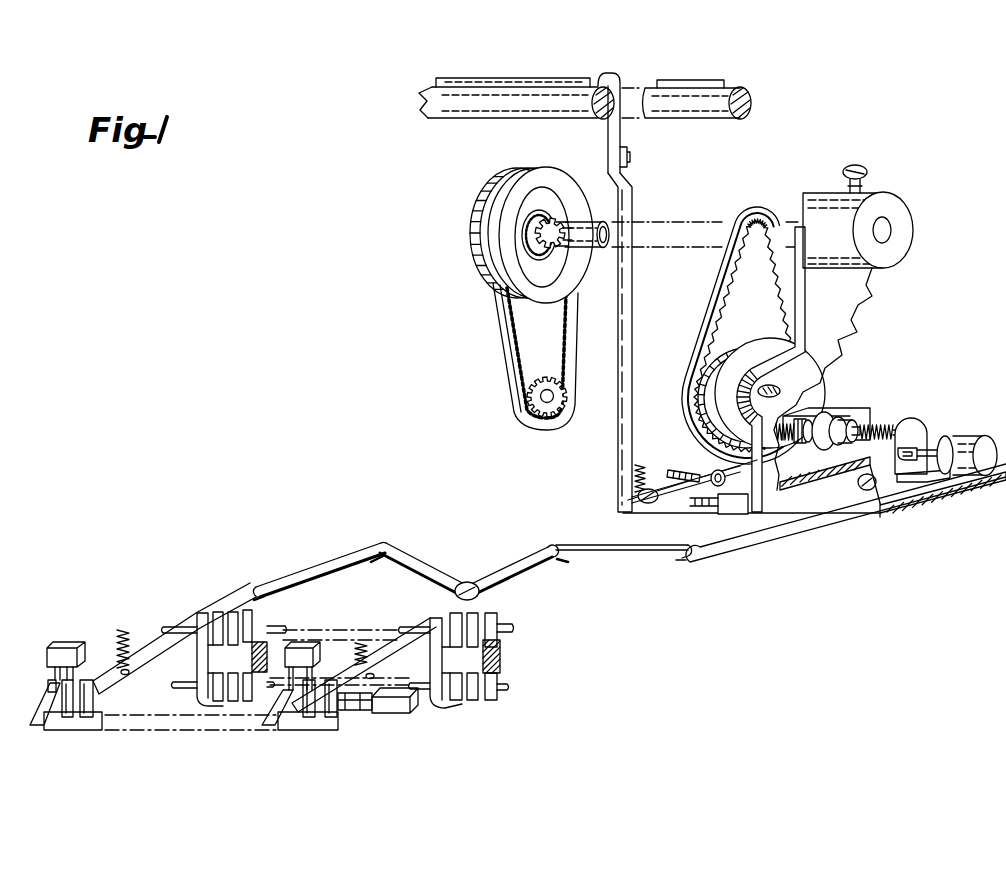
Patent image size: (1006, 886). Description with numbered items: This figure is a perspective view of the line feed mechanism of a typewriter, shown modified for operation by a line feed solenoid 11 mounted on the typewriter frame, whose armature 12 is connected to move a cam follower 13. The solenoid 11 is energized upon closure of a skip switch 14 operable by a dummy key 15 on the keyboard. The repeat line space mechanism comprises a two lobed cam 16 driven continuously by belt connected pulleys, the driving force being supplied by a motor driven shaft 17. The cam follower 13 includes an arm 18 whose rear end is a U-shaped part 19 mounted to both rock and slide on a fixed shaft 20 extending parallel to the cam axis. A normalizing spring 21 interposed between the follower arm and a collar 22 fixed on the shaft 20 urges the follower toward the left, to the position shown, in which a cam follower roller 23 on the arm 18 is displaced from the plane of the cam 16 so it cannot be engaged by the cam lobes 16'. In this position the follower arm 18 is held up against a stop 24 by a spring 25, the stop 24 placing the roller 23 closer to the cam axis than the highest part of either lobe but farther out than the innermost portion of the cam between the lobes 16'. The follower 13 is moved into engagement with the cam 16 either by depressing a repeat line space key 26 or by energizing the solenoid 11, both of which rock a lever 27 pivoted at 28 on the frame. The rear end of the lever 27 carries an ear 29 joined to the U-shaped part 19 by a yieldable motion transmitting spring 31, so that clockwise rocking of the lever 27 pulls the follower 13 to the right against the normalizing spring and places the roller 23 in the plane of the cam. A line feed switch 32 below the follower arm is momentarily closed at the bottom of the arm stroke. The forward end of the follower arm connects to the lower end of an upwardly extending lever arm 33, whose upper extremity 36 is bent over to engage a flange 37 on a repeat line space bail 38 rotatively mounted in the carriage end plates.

The line feed solenoid 11 is at (960, 443).
The armature 12 is at (937, 441).
The cam follower 13 is at (666, 512).
The skip switch 14 is at (390, 712).
The dummy key 15 is at (316, 656).
The two lobed cam 16 is at (731, 335).
The cam lobes 16' is at (761, 371).
The motor driven shaft 17 is at (550, 400).
The follower arm 18 is at (660, 482).
The U-shaped part 19 is at (846, 410).
The fixed shaft 20 is at (862, 427).
The normalizing spring 21 is at (790, 415).
The collar 22 is at (820, 414).
The cam follower roller 23 is at (716, 470).
The stop 24 is at (697, 482).
The spring 25 is at (637, 467).
The repeat line space key 26 is at (67, 645).
The lever 27 is at (803, 517).
The pivot 28 is at (867, 490).
The ear 29 is at (915, 427).
The yieldable motion transmitting spring 31 is at (893, 427).
The line feed switch 32 is at (733, 507).
The lever arm 33 is at (622, 438).
The upper extremity 36 is at (612, 78).
The flange 37 is at (698, 82).
The repeat line space bail 38 is at (753, 98).